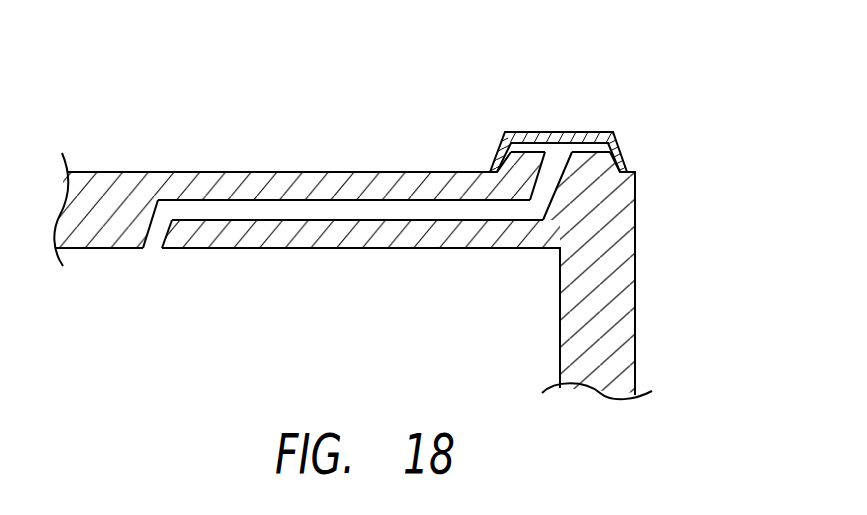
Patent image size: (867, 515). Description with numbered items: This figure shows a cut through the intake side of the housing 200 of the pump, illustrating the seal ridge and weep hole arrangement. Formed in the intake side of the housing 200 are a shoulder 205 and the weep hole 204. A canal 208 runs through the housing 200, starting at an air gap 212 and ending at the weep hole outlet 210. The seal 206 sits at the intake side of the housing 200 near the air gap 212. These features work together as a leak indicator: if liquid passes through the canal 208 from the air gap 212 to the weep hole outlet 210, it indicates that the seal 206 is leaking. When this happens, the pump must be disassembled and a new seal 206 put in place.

The housing 200 is at (636, 285).
The weep hole 204 is at (555, 165).
The shoulder 205 is at (529, 152).
The seal 206 is at (590, 133).
The canal 208 is at (338, 210).
The weep hole outlet 210 is at (151, 241).
The air gap 212 is at (607, 147).